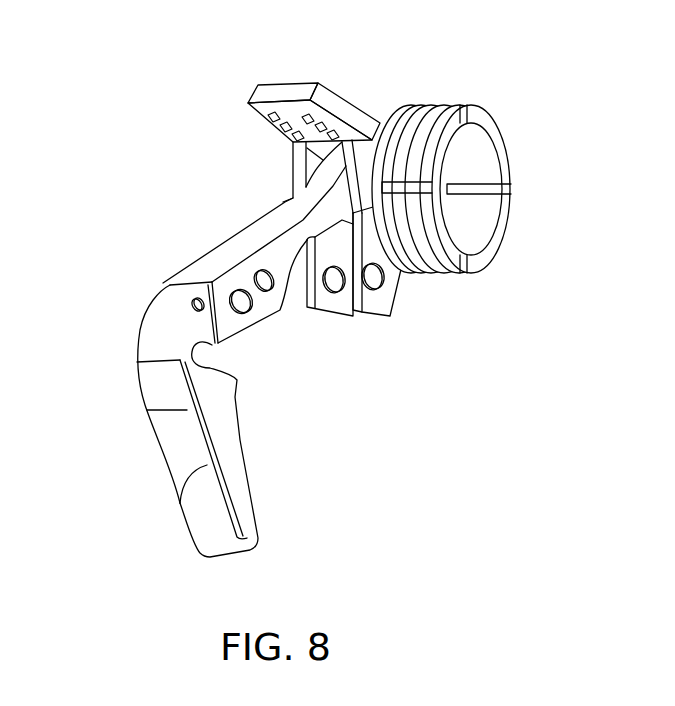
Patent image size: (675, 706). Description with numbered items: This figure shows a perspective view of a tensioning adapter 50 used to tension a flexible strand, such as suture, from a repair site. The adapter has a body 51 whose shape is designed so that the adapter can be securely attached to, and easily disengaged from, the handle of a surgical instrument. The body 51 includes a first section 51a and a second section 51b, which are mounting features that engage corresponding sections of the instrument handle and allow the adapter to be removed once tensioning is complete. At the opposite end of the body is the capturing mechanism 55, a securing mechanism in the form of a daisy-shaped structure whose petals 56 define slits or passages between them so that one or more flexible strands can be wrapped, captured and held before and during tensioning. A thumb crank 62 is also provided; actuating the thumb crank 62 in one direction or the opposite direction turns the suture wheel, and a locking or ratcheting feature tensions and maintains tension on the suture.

The tensioning adapter 50 is at (298, 310).
The body 51 is at (230, 252).
The first section 51a is at (180, 503).
The second section 51b is at (382, 299).
The capturing mechanism 55 is at (473, 157).
The petals 56 is at (408, 142).
The thumb crank 62 is at (286, 143).